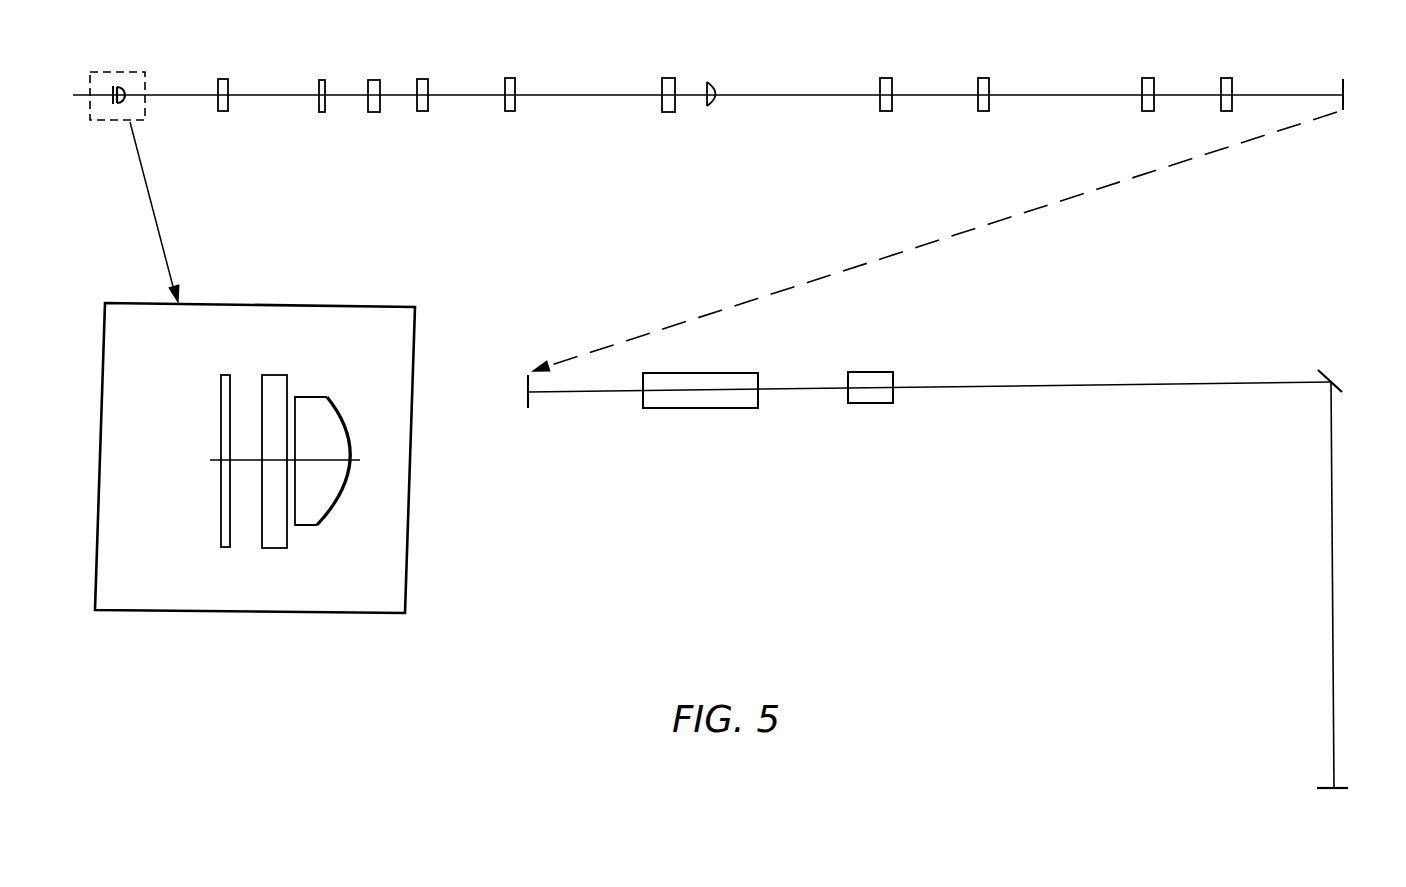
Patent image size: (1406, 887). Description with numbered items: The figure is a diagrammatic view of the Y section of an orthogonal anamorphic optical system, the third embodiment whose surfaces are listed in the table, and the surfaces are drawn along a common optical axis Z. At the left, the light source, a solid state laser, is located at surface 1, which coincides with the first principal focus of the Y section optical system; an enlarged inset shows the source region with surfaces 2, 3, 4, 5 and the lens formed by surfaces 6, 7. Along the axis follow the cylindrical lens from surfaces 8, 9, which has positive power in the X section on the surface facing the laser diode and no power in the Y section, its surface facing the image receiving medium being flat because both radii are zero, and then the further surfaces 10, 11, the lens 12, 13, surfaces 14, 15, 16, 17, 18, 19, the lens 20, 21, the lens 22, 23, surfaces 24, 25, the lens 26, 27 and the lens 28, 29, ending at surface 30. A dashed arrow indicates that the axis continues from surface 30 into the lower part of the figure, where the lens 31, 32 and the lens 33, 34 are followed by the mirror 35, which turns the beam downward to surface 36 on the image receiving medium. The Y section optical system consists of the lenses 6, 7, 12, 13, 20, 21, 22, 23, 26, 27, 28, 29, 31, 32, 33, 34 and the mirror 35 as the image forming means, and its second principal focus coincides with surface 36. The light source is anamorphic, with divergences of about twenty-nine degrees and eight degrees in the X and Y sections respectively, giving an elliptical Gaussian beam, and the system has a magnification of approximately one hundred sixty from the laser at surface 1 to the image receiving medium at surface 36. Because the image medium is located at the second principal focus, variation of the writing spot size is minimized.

The surface 1 is at (255, 458).
The surface 2 is at (210, 486).
The surface 3 is at (230, 530).
The surface 4 is at (279, 442).
The surface 5 is at (287, 386).
The lens surface 6 is at (334, 474).
The lens surface 7 is at (350, 447).
The lens surface 8 is at (225, 96).
The lens surface 9 is at (229, 104).
The surface 10 is at (326, 97).
The surface 11 is at (326, 104).
The lens surface 12 is at (379, 97).
The lens surface 13 is at (381, 104).
The surface 14 is at (428, 97).
The surface 15 is at (429, 104).
The surface 16 is at (513, 95).
The surface 17 is at (516, 104).
The surface 18 is at (668, 95).
The surface 19 is at (676, 104).
The lens surface 20 is at (720, 94).
The lens surface 21 is at (716, 100).
The lens surface 22 is at (883, 95).
The lens surface 23 is at (893, 104).
The surface 24 is at (982, 93).
The surface 25 is at (990, 104).
The lens surface 26 is at (1152, 92).
The lens surface 27 is at (1155, 104).
The lens surface 28 is at (1228, 90).
The lens surface 29 is at (1233, 104).
The surface 30 is at (1344, 85).
The lens surface 31 is at (705, 400).
The lens surface 32 is at (758, 398).
The lens surface 33 is at (871, 398).
The lens surface 34 is at (893, 396).
The mirror 35 is at (1324, 373).
The surface 36 is at (1340, 786).